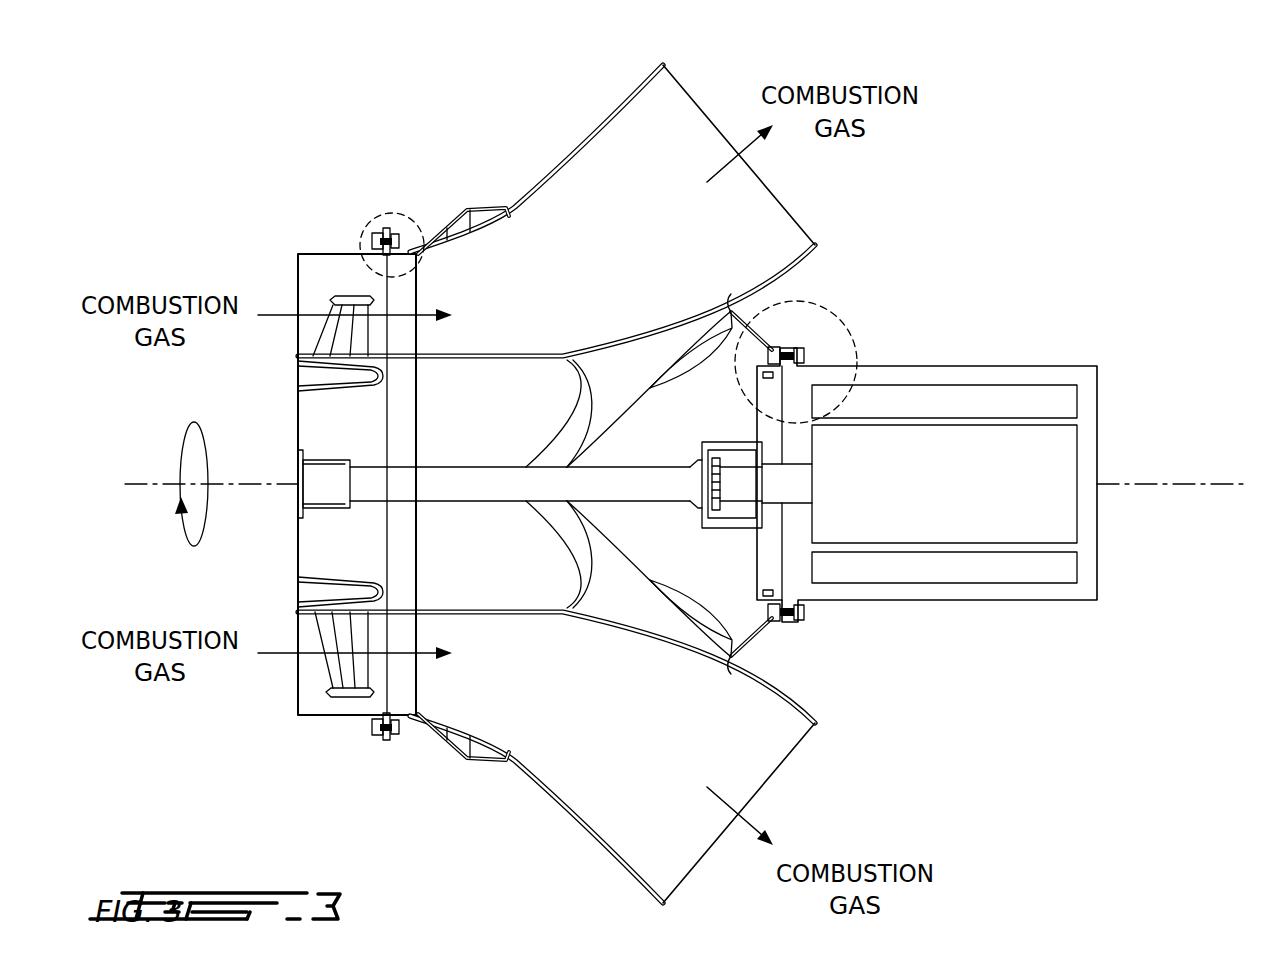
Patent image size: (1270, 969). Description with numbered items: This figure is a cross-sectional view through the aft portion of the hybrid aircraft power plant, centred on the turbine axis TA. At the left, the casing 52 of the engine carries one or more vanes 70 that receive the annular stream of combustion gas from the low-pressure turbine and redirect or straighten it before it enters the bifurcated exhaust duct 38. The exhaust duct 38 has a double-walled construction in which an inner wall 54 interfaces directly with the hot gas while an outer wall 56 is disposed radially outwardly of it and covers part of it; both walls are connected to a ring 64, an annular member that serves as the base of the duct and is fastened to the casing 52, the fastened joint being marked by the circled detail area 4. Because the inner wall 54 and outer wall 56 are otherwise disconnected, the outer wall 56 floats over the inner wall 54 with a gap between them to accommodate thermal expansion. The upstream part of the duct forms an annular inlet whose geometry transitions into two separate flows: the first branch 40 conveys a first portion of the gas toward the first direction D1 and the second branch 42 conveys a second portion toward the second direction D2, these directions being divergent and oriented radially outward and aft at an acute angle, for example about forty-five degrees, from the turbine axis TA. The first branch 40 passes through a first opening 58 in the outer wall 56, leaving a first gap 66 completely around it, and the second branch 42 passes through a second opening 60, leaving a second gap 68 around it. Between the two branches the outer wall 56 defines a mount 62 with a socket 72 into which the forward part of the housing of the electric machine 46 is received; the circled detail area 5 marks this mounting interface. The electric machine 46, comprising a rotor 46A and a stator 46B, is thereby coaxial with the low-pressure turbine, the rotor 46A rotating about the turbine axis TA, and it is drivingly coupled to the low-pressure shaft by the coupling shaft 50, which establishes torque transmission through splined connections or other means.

The bolted joint detail (upper casing flange) 4 is at (393, 212).
The bolted joint detail (generator mount) 5 is at (826, 304).
The bifurcated exhaust duct 38 is at (470, 158).
The first branch 40 is at (688, 97).
The second branch 42 is at (607, 813).
The electric machine 46 is at (1088, 592).
The rotor 46A is at (1097, 518).
The stator 46B is at (1097, 407).
The coupling shaft 50 is at (340, 476).
The casing 52 is at (312, 252).
The inner wall 54 is at (428, 580).
The outer wall 56 is at (640, 549).
The first opening 58 is at (530, 198).
The second opening 60 is at (528, 770).
The mount 62 is at (803, 612).
The ring 64 is at (398, 697).
The first gap 66 is at (509, 201).
The second gap 68 is at (514, 764).
The vanes 70 is at (350, 333).
The socket 72 is at (760, 640).
The turbine axis TA is at (137, 480).
The first direction D1 is at (672, 106).
The second direction D2 is at (743, 818).